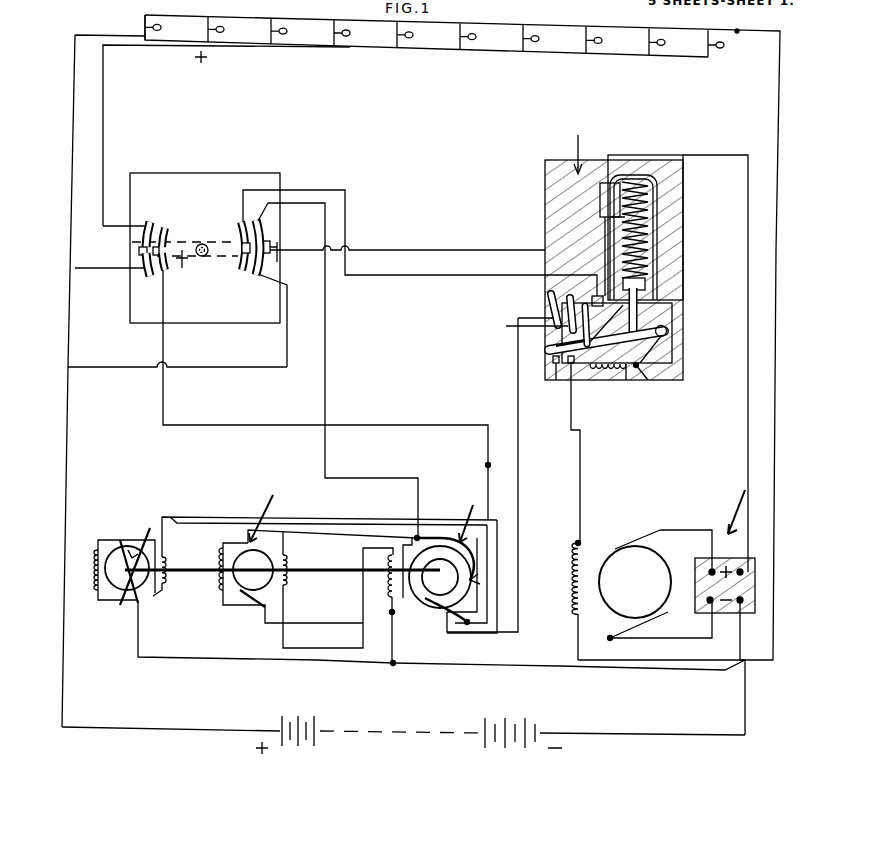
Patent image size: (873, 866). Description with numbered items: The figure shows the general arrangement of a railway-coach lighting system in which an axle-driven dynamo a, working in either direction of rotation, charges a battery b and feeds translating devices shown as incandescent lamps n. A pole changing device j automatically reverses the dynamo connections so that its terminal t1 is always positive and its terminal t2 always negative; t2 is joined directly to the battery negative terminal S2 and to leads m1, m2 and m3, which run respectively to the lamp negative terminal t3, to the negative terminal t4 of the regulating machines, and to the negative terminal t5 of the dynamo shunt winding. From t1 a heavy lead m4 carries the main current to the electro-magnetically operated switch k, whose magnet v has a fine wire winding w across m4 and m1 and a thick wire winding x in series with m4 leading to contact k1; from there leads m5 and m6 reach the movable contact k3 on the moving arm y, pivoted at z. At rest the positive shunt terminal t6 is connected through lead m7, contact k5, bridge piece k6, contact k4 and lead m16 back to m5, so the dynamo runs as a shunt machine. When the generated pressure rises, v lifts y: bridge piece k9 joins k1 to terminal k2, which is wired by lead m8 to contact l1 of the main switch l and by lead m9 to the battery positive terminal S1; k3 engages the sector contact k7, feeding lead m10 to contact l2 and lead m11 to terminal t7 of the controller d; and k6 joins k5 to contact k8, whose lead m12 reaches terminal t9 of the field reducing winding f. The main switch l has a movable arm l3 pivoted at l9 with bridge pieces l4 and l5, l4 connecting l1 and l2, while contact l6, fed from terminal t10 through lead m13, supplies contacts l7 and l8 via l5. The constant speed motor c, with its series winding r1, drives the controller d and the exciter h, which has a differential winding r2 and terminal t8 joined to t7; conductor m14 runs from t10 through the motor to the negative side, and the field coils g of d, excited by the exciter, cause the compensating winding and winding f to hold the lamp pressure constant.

The incandescent lamps n is at (470, 40).
The negative terminal of the translating devices t3 is at (737, 34).
The lead m1 is at (777, 118).
The lead m9 is at (69, 500).
The main switch l is at (188, 173).
The contact strip l1 is at (268, 240).
The contact strip l2 is at (243, 266).
The movable arm l3 is at (213, 248).
The bridge piece l4 is at (260, 268).
The bridge piece l5 is at (162, 270).
The contact l6 is at (166, 232).
The contact l7 is at (146, 222).
The contact l8 is at (146, 268).
The pivot l9 is at (205, 244).
The lead m10 is at (346, 228).
The lead m8 is at (422, 256).
The lead m11 is at (326, 398).
The lead m13 is at (164, 366).
The electro-magnetically operated switch k is at (548, 186).
The magnet v is at (645, 180).
The thick wire winding x is at (650, 206).
The fine wire winding w is at (640, 285).
The terminal k2 is at (596, 296).
The contact k1 is at (645, 302).
The pivot z is at (668, 330).
The lead m5 is at (672, 348).
The moving arm y is at (655, 345).
The contact k8 is at (553, 308).
The fixed sector shaped contact k7 is at (520, 318).
The contact k4 is at (560, 332).
The contact k5 is at (560, 340).
The bridge piece k6 is at (550, 358).
The movable contact k3 is at (568, 365).
The flexible lead m6 is at (600, 372).
The lead m16 is at (628, 372).
The bridge piece k9 is at (650, 370).
The lead m12 is at (520, 505).
The lead m7 is at (582, 508).
The heavy lead m4 is at (747, 468).
The constant speed motor c is at (130, 572).
The series winding r1 is at (166, 566).
The exciter h is at (255, 585).
The terminal of the exciter t8 is at (264, 513).
The differential winding r2 is at (290, 568).
The conductor m14 is at (310, 518).
The controller d is at (437, 582).
The field reducing winding f is at (465, 593).
The field coils g is at (391, 612).
The terminal of winding f t9 is at (440, 585).
The terminal of winding e t10 is at (466, 624).
The terminal of winding e t7 is at (418, 537).
The negative terminal of the regulating machines t4 is at (392, 666).
The dynamo a is at (637, 570).
The positive terminal of the dynamo shunt winding t6 is at (591, 588).
The negative terminal of the dynamo shunt winding t5 is at (578, 622).
The pole changing device j is at (713, 568).
The positive terminal t1 is at (746, 568).
The negative terminal t2 is at (742, 608).
The lead m2 is at (576, 663).
The lead m3 is at (650, 670).
The battery b is at (400, 730).
The positive terminal of the battery S1 is at (280, 731).
The negative terminal of the battery S2 is at (556, 716).